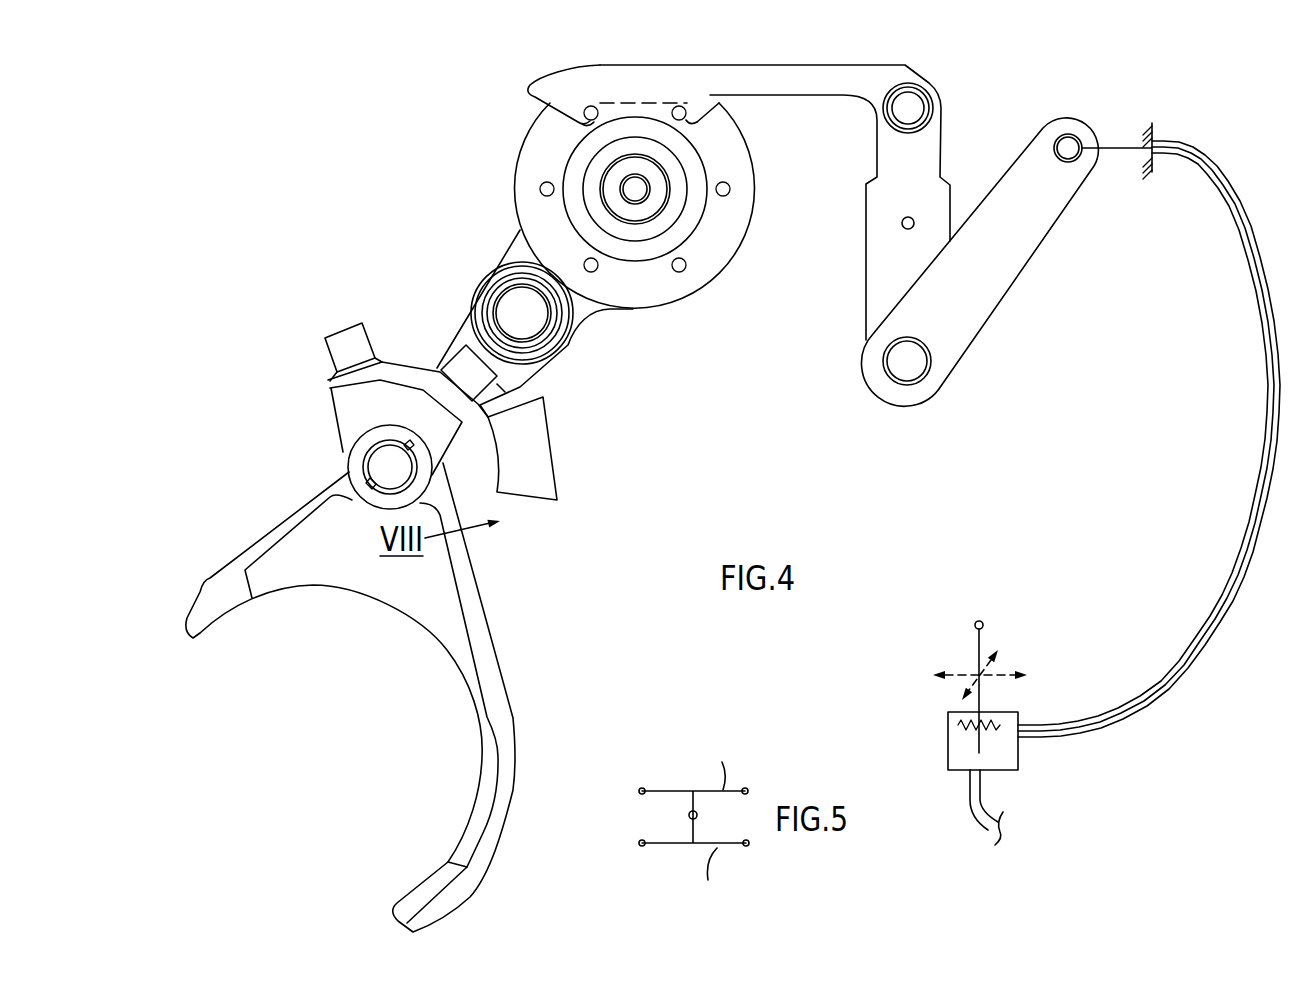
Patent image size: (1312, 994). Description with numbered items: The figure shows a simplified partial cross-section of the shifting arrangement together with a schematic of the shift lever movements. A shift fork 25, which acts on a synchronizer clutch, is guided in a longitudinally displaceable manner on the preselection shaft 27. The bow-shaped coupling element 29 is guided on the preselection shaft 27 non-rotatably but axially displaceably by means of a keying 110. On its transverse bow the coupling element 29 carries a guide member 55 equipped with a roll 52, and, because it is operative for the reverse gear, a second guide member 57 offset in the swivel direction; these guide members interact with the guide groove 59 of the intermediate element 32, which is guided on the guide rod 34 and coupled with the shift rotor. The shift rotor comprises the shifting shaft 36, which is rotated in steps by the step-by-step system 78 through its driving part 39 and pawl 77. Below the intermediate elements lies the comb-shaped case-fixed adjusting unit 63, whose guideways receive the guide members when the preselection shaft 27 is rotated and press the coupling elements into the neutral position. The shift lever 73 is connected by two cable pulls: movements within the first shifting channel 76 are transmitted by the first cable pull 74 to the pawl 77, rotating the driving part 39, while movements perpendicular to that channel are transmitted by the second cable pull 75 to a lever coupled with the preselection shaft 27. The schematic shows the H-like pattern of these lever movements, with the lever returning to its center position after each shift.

In FIG. 4, the shift fork 25 is at (500, 675).
In FIG. 4, the preselection shaft 27 is at (387, 474).
In FIG. 4, the coupling element 29 is at (337, 413).
In FIG. 4, the intermediate element 32 is at (585, 352).
In FIG. 4, the guide rod 34 is at (518, 313).
In FIG. 4, the shifting shaft 36 is at (657, 187).
In FIG. 4, the driving part 39 is at (717, 227).
In FIG. 4, the roll 52 is at (442, 340).
In FIG. 4, the guide member 55 is at (460, 367).
In FIG. 4, the second guide member 57 is at (323, 345).
In FIG. 4, the guide groove 59 is at (500, 388).
In FIG. 4, the adjusting unit 63 is at (545, 471).
In FIG. 4, the shift lever 73 is at (980, 642).
In FIG. 4, the first cable pull 74 is at (1107, 731).
In FIG. 4, the second cable pull 75 is at (982, 790).
In FIG. 5, the first shifting channel 76 is at (670, 790).
In FIG. 4, the pawl 77 is at (830, 85).
In FIG. 4, the step-by-step system 78 is at (946, 78).
In FIG. 4, the keying 110 is at (370, 482).